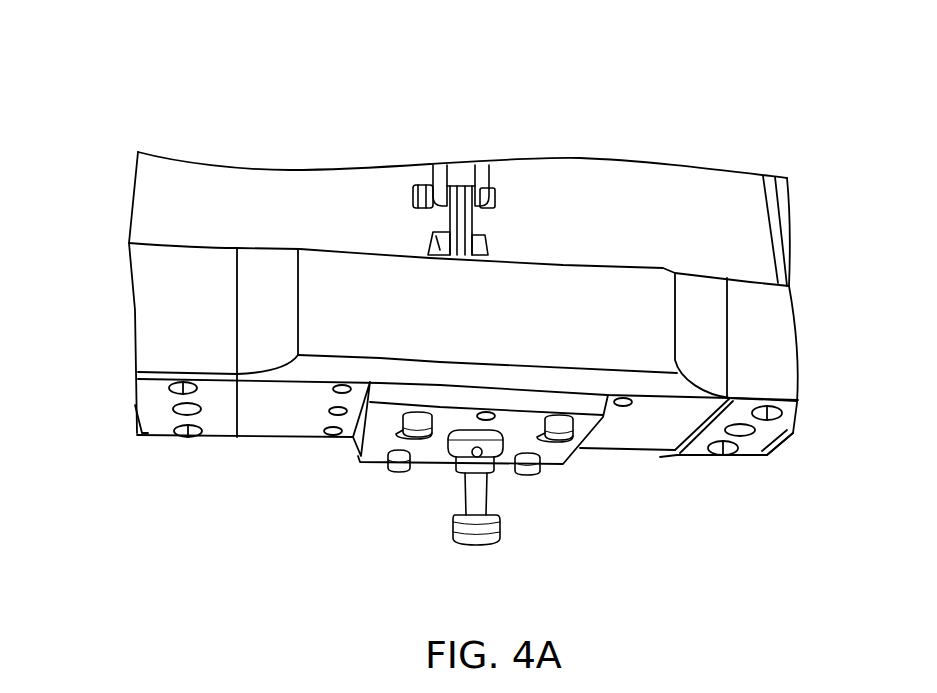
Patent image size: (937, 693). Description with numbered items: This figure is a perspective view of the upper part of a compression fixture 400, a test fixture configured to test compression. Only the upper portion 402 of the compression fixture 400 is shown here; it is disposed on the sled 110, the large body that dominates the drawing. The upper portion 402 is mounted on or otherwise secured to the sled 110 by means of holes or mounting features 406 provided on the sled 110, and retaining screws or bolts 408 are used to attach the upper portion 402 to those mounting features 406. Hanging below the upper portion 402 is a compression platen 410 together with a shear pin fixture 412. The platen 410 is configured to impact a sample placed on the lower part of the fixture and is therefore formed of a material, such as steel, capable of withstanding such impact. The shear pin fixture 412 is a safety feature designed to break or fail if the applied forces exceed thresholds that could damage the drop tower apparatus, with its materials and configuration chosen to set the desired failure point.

The compression fixture 400 is at (100, 83).
The sled 110 is at (642, 250).
The upper portion 402 is at (600, 430).
The mounting features 406 is at (330, 389).
The bolts 408 is at (403, 430).
The compression platen 410 is at (497, 532).
The shear pin fixture 412 is at (438, 469).